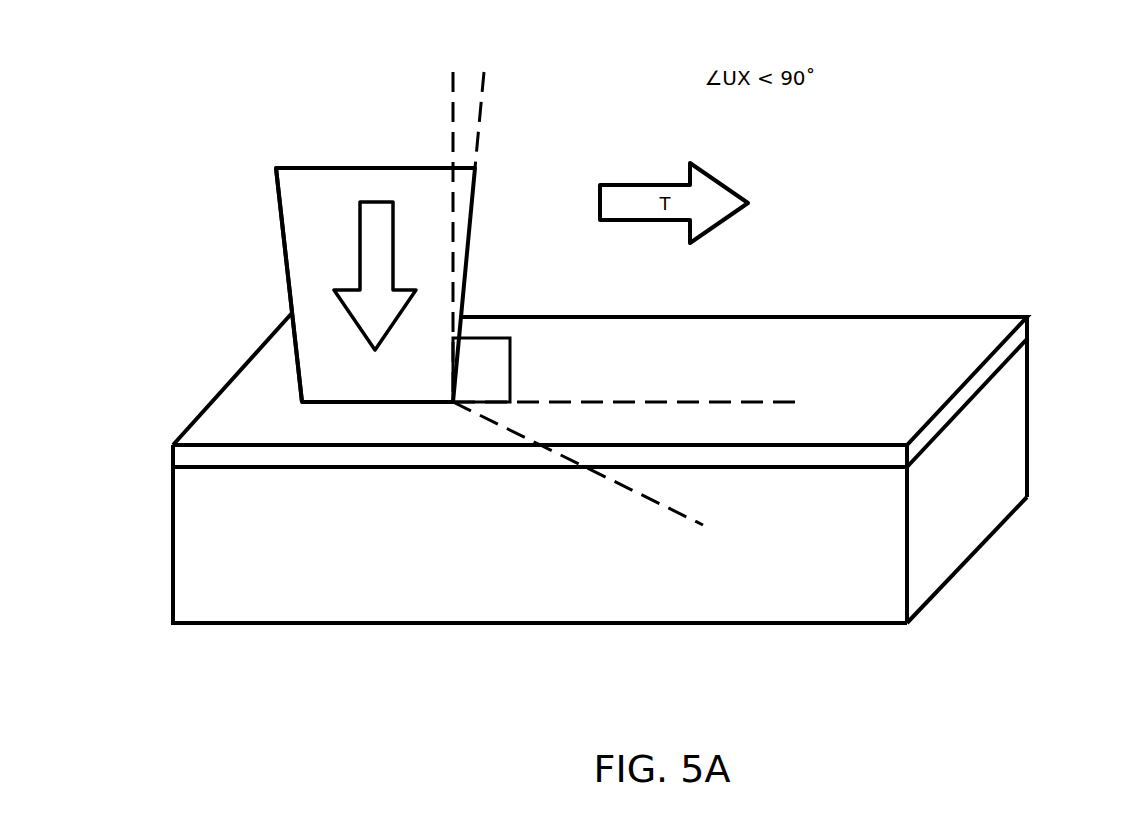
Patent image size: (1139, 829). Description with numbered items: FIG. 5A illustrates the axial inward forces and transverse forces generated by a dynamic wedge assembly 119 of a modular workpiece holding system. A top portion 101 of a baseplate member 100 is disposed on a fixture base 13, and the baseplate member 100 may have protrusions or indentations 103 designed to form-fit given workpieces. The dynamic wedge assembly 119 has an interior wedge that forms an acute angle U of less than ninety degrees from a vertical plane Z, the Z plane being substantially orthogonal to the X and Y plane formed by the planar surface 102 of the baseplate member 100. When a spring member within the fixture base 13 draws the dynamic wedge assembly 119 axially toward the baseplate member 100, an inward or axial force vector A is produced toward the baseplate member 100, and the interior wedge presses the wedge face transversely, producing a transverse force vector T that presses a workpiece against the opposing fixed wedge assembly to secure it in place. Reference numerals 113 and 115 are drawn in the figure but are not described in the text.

The baseplate member 100 is at (1030, 328).
The top portion 101 is at (893, 340).
The planar surface 102 is at (955, 352).
The protrusions or indentations 103 is at (608, 500).
The fixture base 13 is at (345, 610).
The tool axis 113 is at (418, 106).
The tool 115 is at (307, 280).
The dynamic wedge assembly 119 is at (247, 246).